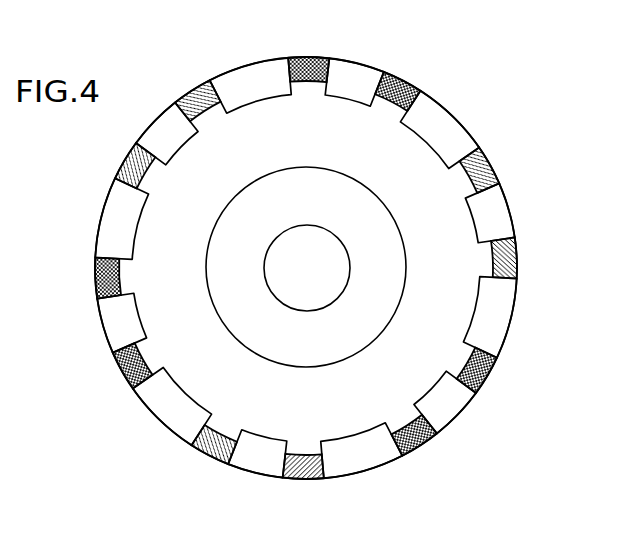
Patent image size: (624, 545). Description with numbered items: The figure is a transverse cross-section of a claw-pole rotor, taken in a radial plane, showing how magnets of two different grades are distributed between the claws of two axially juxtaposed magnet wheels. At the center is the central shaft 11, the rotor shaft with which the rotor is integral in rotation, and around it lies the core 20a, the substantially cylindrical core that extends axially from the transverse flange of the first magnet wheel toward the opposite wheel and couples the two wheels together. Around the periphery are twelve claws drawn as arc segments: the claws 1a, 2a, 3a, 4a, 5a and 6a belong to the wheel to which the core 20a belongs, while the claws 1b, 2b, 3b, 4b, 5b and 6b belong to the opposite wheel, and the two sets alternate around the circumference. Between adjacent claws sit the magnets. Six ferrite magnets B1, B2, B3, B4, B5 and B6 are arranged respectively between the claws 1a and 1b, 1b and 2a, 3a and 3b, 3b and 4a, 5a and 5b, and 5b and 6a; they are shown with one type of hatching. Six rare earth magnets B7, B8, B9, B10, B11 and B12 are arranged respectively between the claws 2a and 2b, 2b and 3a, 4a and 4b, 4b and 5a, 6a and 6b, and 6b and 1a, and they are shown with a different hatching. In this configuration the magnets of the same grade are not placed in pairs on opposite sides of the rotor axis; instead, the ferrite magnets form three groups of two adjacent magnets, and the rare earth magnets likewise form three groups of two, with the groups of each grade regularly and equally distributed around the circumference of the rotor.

The claw 1a is at (248, 82).
The claw 1b is at (357, 73).
The claw 2a is at (435, 128).
The claw 2b is at (495, 207).
The claw 3a is at (488, 316).
The claw 3b is at (440, 410).
The claw 4a is at (342, 447).
The claw 4b is at (253, 458).
The claw 5a is at (173, 410).
The claw 5b is at (112, 320).
The claw 6a is at (117, 225).
The claw 6b is at (162, 135).
The ferrite magnet B1 is at (318, 58).
The ferrite magnet B2 is at (410, 83).
The ferrite magnet B3 is at (487, 370).
The ferrite magnet B4 is at (415, 445).
The ferrite magnet B5 is at (120, 375).
The ferrite magnet B6 is at (93, 293).
The rare earth magnet B7 is at (493, 160).
The rare earth magnet B8 is at (515, 253).
The rare earth magnet B9 is at (300, 468).
The rare earth magnet B10 is at (212, 453).
The rare earth magnet B11 is at (133, 175).
The rare earth magnet B12 is at (198, 95).
The core 20a is at (347, 212).
The central shaft 11 is at (320, 286).